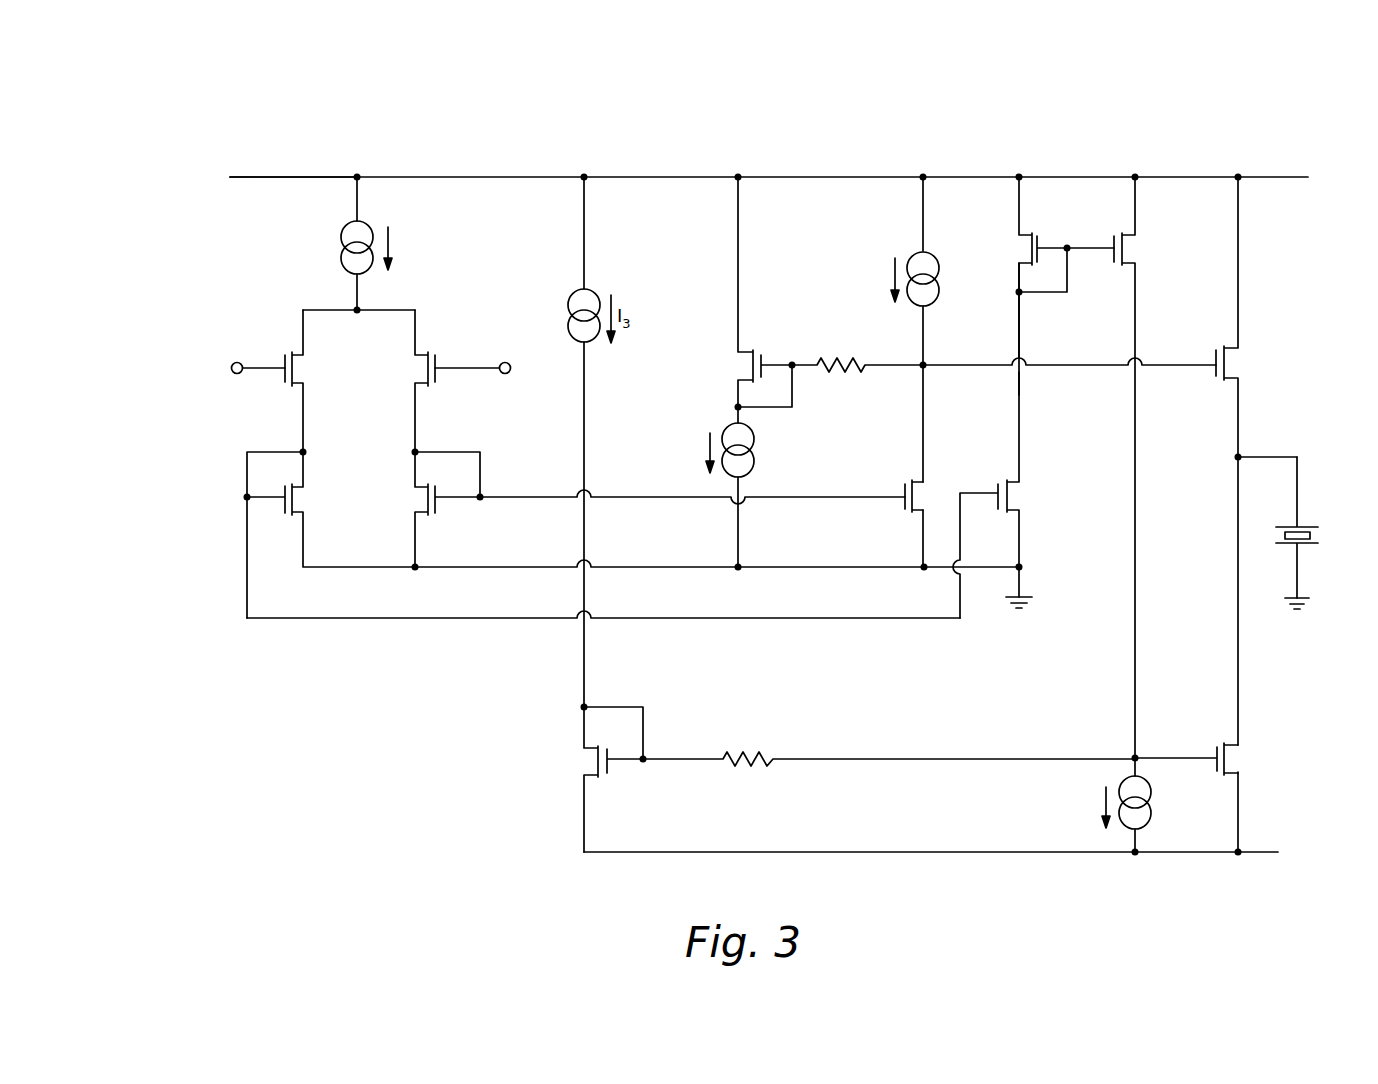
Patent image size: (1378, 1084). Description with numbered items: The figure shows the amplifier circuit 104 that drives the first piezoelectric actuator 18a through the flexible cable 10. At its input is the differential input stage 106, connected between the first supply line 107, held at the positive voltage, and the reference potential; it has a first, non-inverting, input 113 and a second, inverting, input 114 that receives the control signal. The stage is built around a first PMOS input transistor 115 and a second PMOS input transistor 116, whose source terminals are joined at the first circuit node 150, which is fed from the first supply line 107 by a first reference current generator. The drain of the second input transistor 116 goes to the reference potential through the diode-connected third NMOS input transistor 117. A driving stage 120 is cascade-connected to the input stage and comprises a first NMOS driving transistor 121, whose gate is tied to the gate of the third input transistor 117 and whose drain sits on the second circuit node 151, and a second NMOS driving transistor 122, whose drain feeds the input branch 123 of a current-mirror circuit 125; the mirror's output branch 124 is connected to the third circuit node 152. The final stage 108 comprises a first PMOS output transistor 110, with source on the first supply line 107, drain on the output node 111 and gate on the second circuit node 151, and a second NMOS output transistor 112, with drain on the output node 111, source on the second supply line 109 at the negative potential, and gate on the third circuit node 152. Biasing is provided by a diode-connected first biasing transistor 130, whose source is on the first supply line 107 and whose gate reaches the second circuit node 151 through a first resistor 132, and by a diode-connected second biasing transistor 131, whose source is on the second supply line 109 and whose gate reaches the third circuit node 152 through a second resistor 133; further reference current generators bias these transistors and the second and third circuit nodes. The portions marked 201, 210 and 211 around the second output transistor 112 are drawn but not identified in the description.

The flexible cable 10 is at (1315, 545).
The first piezoelectric actuator 18a is at (1305, 611).
The amplifier circuit 104 is at (288, 148).
The differential input stage 106 is at (327, 397).
The first supply line 107 is at (1193, 178).
The final stage 108 is at (1206, 514).
The second supply line 109 is at (1206, 850).
The first PMOS output transistor 110 is at (1232, 364).
The output node 111 is at (1236, 457).
The second NMOS output transistor 112 is at (1224, 720).
The first non-inverting input 113 is at (251, 374).
The second inverting input 114 is at (489, 362).
The first PMOS input transistor 115 is at (296, 358).
The second PMOS input transistor 116 is at (428, 371).
The third NMOS input transistor 117 is at (440, 505).
The driving stage 120 is at (899, 514).
The first NMOS driving transistor 121 is at (905, 490).
The second NMOS driving transistor 122 is at (998, 487).
The input branch 123 is at (1019, 385).
The output branch 124 is at (1126, 255).
The current-mirror circuit 125 is at (1114, 429).
The first biasing transistor 130 is at (752, 356).
The second biasing transistor 131 is at (604, 768).
The first resistor 132 is at (828, 358).
The second resistor 133 is at (752, 750).
The first circuit node 150 is at (357, 308).
The second circuit node 151 is at (922, 362).
The third circuit node 152 is at (1134, 756).
The drain of output transistor 201 is at (1238, 711).
The source of output transistor 210 is at (1238, 811).
The gate of output transistor 211 is at (1216, 744).